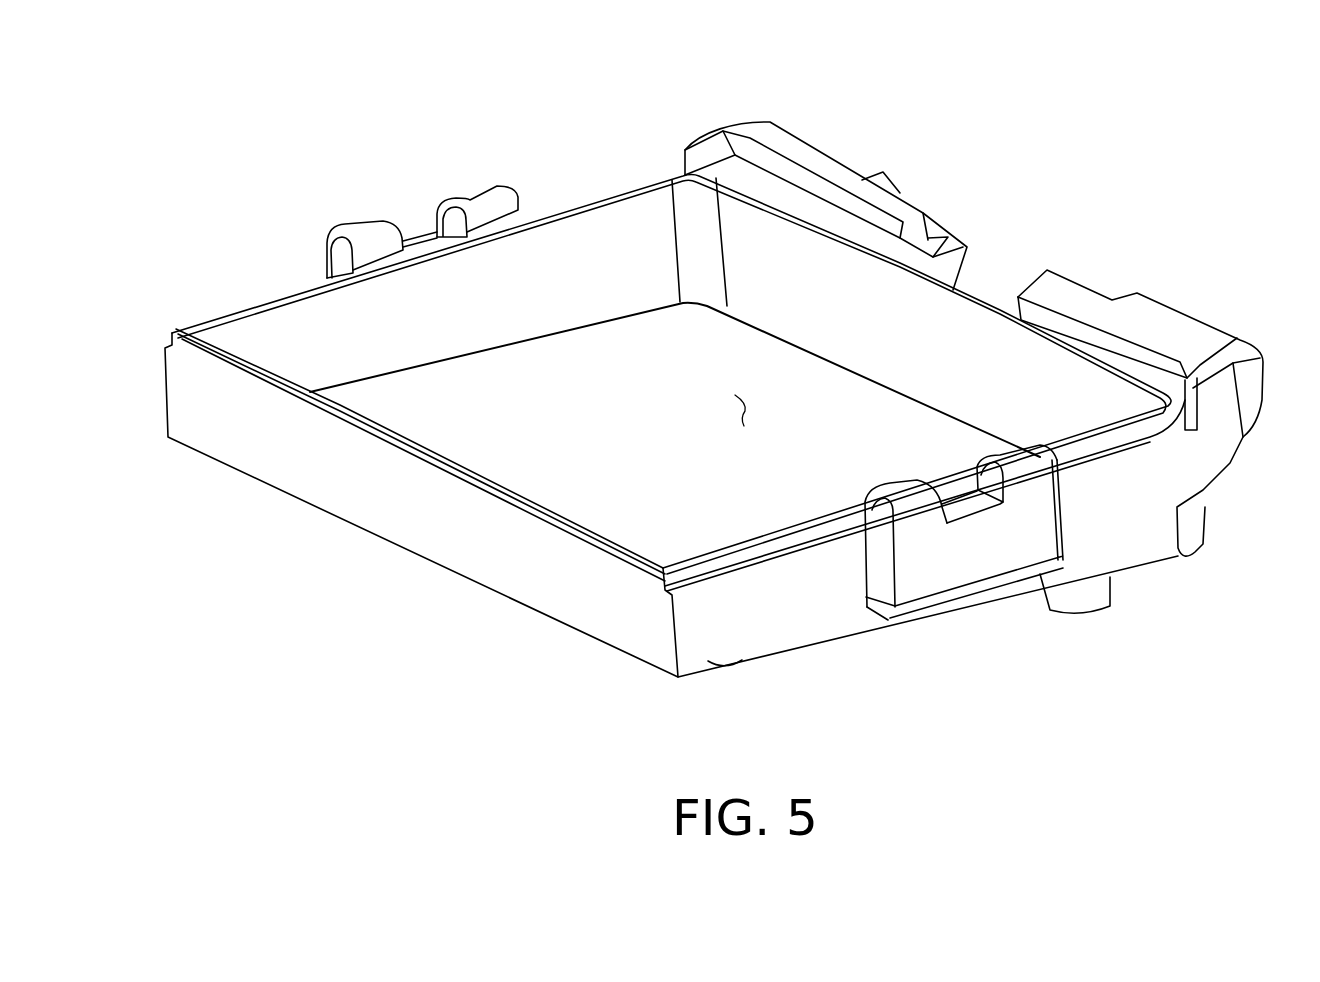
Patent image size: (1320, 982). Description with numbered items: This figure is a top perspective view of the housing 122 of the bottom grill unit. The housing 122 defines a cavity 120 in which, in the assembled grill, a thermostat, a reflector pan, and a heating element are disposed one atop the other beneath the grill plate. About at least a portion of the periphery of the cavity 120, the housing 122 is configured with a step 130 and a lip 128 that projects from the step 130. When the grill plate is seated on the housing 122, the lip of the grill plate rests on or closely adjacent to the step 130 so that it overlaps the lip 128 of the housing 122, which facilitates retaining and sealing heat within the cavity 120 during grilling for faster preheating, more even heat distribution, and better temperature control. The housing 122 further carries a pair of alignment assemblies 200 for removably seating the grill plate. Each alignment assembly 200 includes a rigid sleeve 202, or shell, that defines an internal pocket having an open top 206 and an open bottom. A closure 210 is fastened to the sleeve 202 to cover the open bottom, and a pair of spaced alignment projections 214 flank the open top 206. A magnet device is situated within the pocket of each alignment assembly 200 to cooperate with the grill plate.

The cavity 120 is at (746, 410).
The housing 122 is at (763, 120).
The lip 128 is at (747, 555).
The step 130 is at (700, 583).
The alignment assembly 200 is at (470, 187).
The rigid sleeve 202 is at (920, 578).
The open top 206 is at (420, 234).
The closure 210 is at (1015, 577).
The alignment projection 214 is at (355, 242).